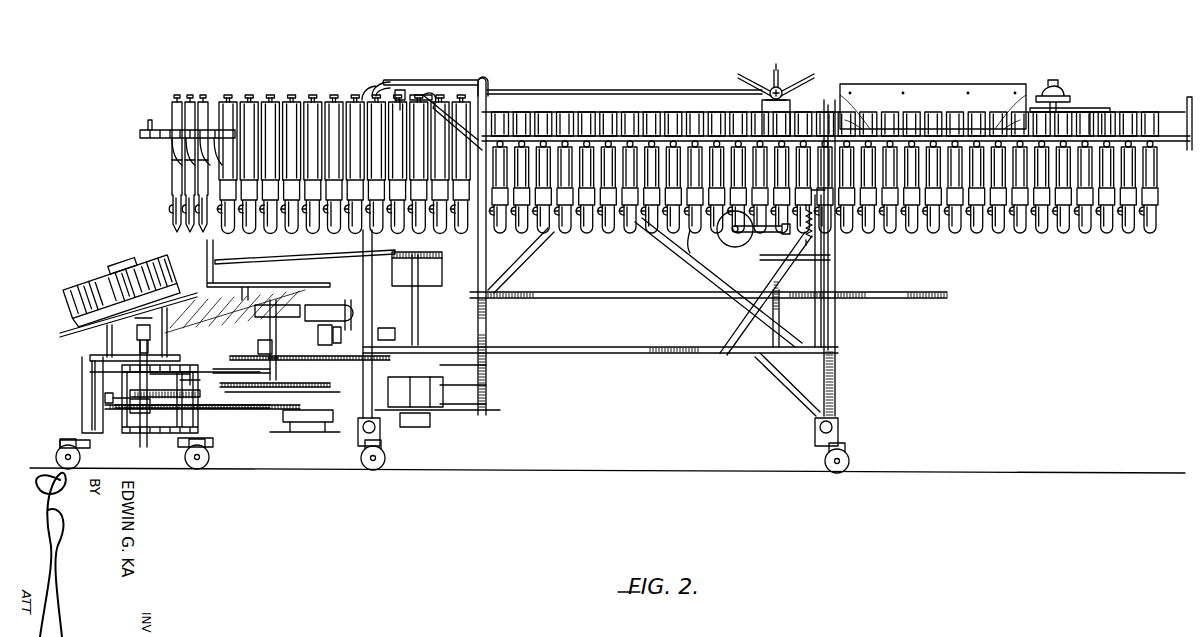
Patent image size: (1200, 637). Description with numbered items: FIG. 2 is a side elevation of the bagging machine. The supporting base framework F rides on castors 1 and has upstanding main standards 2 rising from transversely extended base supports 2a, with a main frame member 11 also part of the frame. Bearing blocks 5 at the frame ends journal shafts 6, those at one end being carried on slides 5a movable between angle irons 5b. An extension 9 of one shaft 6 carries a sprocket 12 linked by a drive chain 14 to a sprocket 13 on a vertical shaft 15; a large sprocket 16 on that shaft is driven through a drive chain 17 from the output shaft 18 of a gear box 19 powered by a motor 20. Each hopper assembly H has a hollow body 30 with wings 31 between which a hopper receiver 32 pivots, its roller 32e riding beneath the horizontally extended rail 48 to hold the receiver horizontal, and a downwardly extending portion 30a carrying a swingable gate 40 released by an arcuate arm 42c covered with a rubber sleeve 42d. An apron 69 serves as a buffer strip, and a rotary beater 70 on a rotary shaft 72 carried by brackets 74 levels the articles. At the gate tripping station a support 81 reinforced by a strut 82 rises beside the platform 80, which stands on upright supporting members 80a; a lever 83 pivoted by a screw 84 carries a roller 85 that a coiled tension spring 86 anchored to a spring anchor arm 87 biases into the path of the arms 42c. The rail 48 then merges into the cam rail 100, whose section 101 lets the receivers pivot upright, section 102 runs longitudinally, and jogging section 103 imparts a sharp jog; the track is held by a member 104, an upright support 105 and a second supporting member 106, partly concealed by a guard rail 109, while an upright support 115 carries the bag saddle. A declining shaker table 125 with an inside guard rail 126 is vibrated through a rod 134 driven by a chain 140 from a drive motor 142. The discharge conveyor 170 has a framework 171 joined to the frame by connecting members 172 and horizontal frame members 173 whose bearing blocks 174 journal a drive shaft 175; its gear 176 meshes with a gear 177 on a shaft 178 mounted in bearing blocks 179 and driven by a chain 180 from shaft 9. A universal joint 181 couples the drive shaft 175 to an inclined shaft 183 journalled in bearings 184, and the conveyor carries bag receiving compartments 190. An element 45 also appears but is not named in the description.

The castors 1 is at (850, 467).
The main standards 2 is at (837, 330).
The base supports 2a is at (840, 435).
The bearing blocks 5 is at (264, 102).
The slides 5a is at (1065, 108).
The angle irons 5b is at (1098, 114).
The shafts 6 is at (1052, 84).
The extension of sprocket shaft 9 is at (228, 341).
The main frame member 11 is at (303, 314).
The sprocket 12 is at (248, 392).
The sprocket 13 is at (457, 234).
The drive chain 14 is at (282, 393).
The shaft 15 is at (310, 432).
The large sprocket 16 is at (261, 339).
The drive chain 17 is at (320, 350).
The output shaft 18 is at (486, 369).
The gear box 19 is at (486, 389).
The motor 20 is at (436, 428).
The hopper body 30 is at (190, 168).
The downwardly extending portion 30a is at (538, 240).
The wings 31 is at (152, 120).
The hopper receiver 32 is at (225, 110).
The roller 32e is at (248, 95).
The gate portion 40 is at (218, 234).
The arcuate arm 42c is at (700, 236).
The rubber sleeve 42d is at (175, 210).
The horizontal rail 45 is at (638, 282).
The rail 48 is at (975, 136).
The apron 69 is at (928, 110).
The rotary beater 70 is at (778, 64).
The rotary shaft 72 is at (773, 86).
The brackets 74 is at (790, 112).
The platform 80 is at (588, 347).
The upright supporting members 80a is at (836, 367).
The support 81 is at (781, 332).
The strut 82 is at (740, 338).
The lever 83 is at (747, 246).
The screw 84 is at (800, 255).
The roller 85 is at (734, 248).
The coiled tension spring 86 is at (822, 252).
The spring anchor arm 87 is at (830, 260).
The cam rail 100 is at (463, 87).
The cam track section 101 is at (500, 110).
The cam track section 102 is at (430, 96).
The jogging cam track section 103 is at (400, 90).
The supporting member 104 is at (482, 94).
The upright support 105 is at (488, 330).
The second supporting member 106 is at (370, 92).
The guard rail 109 is at (468, 80).
The upright support 115 is at (419, 320).
The shaker table 125 is at (290, 252).
The inside guard rail 126 is at (384, 258).
The rod 134 is at (304, 311).
The chain 140 is at (385, 328).
The drive motor 142 is at (486, 409).
The discharge conveyor 170 is at (70, 280).
The framework 171 is at (90, 361).
The connecting members 172 is at (228, 380).
The frame members 173 is at (115, 371).
The bearing blocks 174 is at (160, 346).
The drive shaft 175 is at (148, 447).
The gear 176 is at (105, 406).
The gear 177 is at (200, 400).
The shaft 178 is at (168, 358).
The bearing blocks 179 is at (168, 410).
The chain 180 is at (210, 412).
The universal joint 181 is at (105, 352).
The shaft 183 is at (150, 331).
The bearings 184 is at (113, 282).
The bag receiving compartments 190 is at (62, 307).
The supporting base framework F is at (846, 390).
The hopper assembly H is at (600, 248).